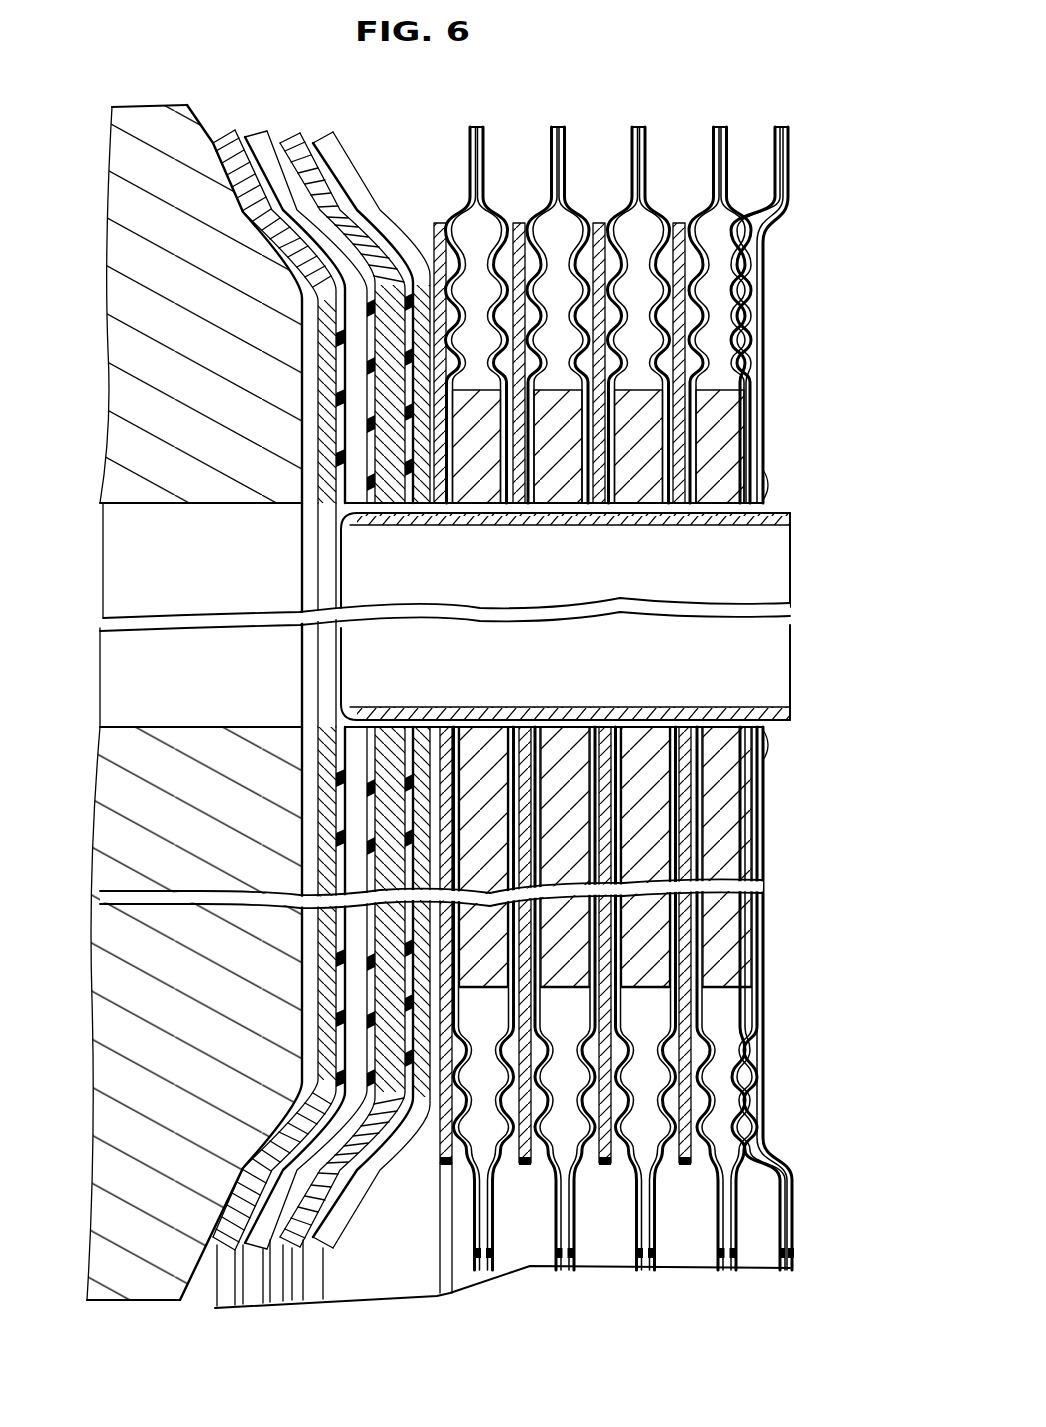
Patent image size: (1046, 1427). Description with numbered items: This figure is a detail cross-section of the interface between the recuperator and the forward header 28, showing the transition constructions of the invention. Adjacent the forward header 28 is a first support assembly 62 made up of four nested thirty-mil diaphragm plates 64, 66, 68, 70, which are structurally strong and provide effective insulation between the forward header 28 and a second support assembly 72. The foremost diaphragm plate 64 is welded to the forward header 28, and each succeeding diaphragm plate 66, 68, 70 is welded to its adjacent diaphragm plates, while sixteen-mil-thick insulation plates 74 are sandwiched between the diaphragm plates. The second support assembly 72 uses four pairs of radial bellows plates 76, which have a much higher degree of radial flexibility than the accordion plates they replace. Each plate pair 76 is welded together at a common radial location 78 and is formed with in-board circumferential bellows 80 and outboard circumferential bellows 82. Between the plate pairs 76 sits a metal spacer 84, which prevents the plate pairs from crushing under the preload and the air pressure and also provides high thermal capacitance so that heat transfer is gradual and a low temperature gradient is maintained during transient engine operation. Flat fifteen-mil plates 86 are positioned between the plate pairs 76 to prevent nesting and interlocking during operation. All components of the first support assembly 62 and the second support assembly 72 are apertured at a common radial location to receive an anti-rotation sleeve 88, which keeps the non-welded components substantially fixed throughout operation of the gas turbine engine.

The forward header 28 is at (197, 477).
The first support assembly 62 is at (217, 1323).
The foremost diaphragm plate 64 is at (322, 268).
The diaphragm plate 66 is at (258, 137).
The diaphragm plate 68 is at (292, 140).
The diaphragm plate 70 is at (336, 136).
The second support assembly 72 is at (482, 83).
The insulation plates 74 is at (413, 437).
The radial bellows plates 76 is at (650, 168).
The common radial location 78 is at (718, 128).
The in-board circumferential bellows 80 is at (703, 1073).
The outboard circumferential bellows 82 is at (575, 247).
The metal spacer 84 is at (557, 737).
The flat plates 86 is at (620, 307).
The anti-rotation sleeve 88 is at (781, 667).